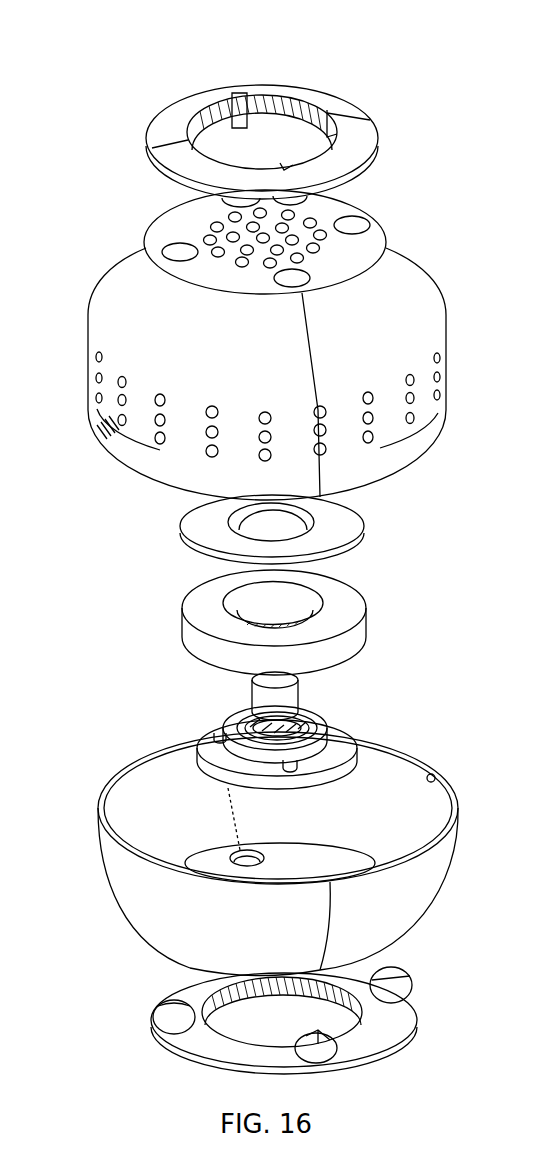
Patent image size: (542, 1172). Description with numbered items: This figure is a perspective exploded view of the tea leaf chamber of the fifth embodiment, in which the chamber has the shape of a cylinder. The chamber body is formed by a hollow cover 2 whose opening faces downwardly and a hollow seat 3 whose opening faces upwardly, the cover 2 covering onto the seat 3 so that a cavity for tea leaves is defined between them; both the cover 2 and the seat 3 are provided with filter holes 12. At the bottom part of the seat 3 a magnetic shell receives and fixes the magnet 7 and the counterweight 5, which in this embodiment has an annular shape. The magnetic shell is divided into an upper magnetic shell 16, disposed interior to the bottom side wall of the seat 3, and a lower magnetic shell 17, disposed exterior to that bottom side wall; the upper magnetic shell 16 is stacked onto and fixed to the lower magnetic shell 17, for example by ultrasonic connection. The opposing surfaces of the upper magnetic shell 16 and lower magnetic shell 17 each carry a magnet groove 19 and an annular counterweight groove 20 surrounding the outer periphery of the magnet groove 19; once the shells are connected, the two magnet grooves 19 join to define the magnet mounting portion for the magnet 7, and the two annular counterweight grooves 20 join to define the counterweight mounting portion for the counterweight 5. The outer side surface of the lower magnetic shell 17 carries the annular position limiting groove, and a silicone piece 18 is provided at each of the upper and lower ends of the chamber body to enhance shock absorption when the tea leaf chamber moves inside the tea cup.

The cover 2 is at (93, 300).
The seat 3 is at (165, 817).
The counterweight 5 is at (182, 622).
The magnet 7 is at (252, 695).
The filter holes 12 is at (209, 410).
The upper magnetic shell 16 is at (182, 530).
The lower magnetic shell 17 is at (200, 750).
The silicone piece 18 is at (167, 118).
The magnet groove 19 is at (313, 710).
The annular counterweight groove 20 is at (333, 750).